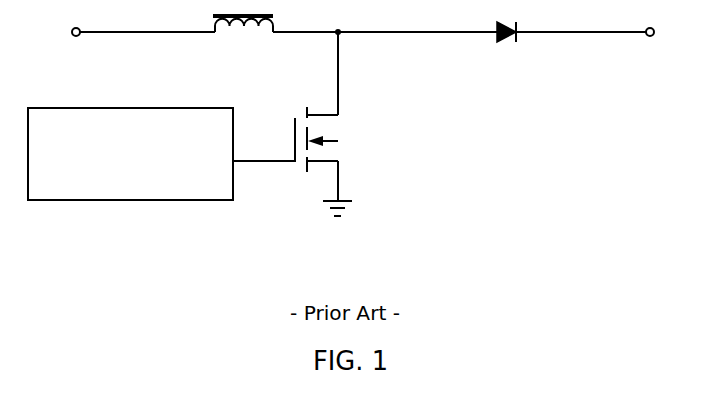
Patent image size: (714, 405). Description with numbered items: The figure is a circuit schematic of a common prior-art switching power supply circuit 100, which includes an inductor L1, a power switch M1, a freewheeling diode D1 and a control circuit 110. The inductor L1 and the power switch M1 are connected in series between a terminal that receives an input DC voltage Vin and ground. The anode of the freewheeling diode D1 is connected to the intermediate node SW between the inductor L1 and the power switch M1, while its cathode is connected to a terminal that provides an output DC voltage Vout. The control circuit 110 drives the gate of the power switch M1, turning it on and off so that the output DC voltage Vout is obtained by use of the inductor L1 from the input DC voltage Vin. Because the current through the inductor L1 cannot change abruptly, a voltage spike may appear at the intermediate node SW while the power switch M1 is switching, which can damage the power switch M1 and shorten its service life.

The switching power supply circuit 100 is at (650, 242).
The control circuit 110 is at (148, 180).
The inductor L1 is at (243, 37).
The power switch M1 is at (340, 124).
The freewheeling diode D1 is at (506, 43).
The intermediate node SW is at (337, 18).
The input DC voltage Vin is at (77, 46).
The output DC voltage Vout is at (656, 18).